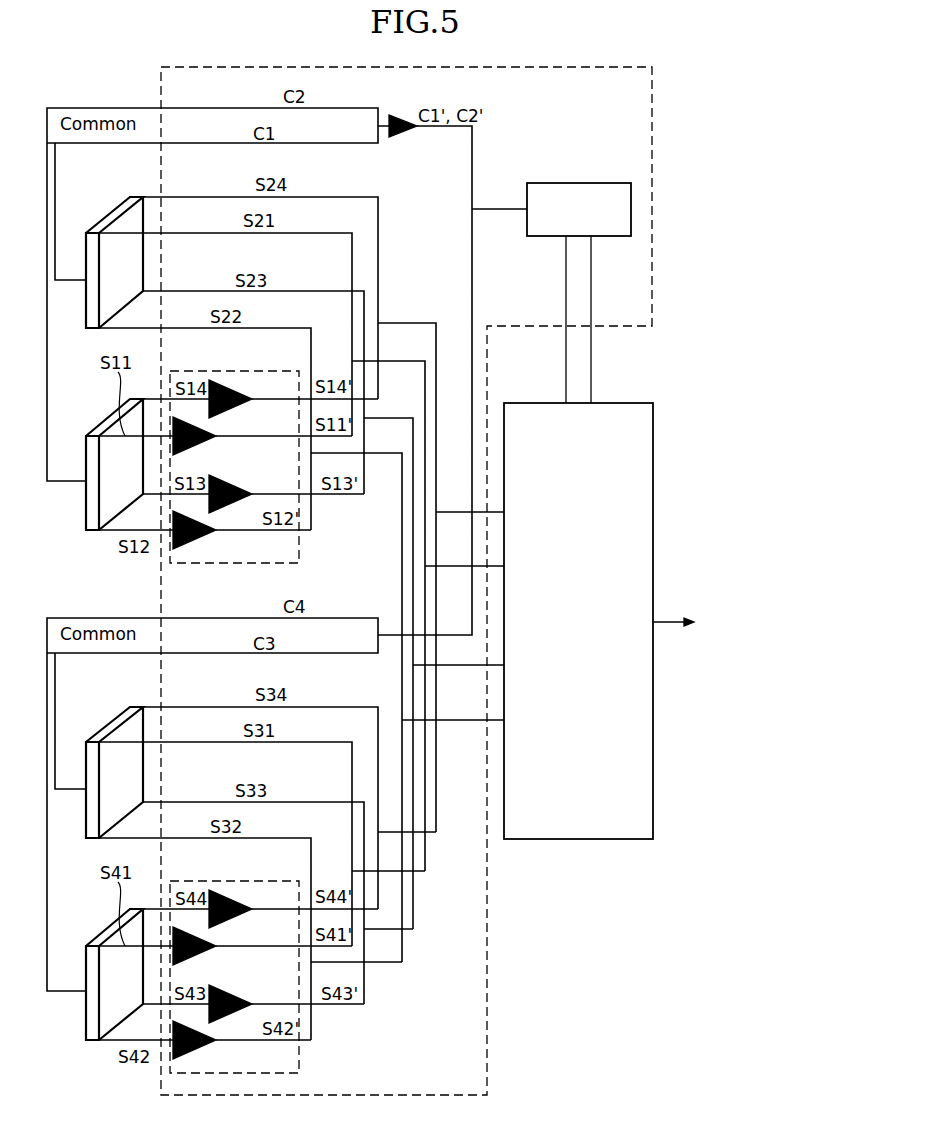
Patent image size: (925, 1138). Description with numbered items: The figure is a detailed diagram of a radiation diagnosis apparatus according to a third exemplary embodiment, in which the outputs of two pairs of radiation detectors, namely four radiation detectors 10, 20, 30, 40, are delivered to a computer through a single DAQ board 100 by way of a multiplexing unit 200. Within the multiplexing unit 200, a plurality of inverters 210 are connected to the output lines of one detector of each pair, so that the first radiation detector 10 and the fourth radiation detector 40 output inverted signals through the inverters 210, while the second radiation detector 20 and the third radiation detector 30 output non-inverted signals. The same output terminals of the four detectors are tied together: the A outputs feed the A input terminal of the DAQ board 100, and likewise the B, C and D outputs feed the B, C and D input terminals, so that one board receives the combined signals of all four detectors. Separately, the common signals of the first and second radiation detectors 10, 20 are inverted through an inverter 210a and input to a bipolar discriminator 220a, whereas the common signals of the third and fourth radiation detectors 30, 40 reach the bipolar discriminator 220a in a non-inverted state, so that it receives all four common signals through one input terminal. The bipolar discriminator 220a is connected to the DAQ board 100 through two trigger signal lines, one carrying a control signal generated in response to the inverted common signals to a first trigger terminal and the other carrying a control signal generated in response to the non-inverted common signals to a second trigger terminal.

The first radiation detector 10 is at (105, 416).
The second radiation detector 20 is at (105, 216).
The third radiation detector 30 is at (105, 726).
The fourth radiation detector 40 is at (105, 926).
The DAQ board 100 is at (580, 840).
The multiplexing unit 200 is at (652, 192).
The inverter 210 is at (203, 538).
The inverter 210a is at (403, 115).
The bipolar discriminator 220a is at (577, 183).